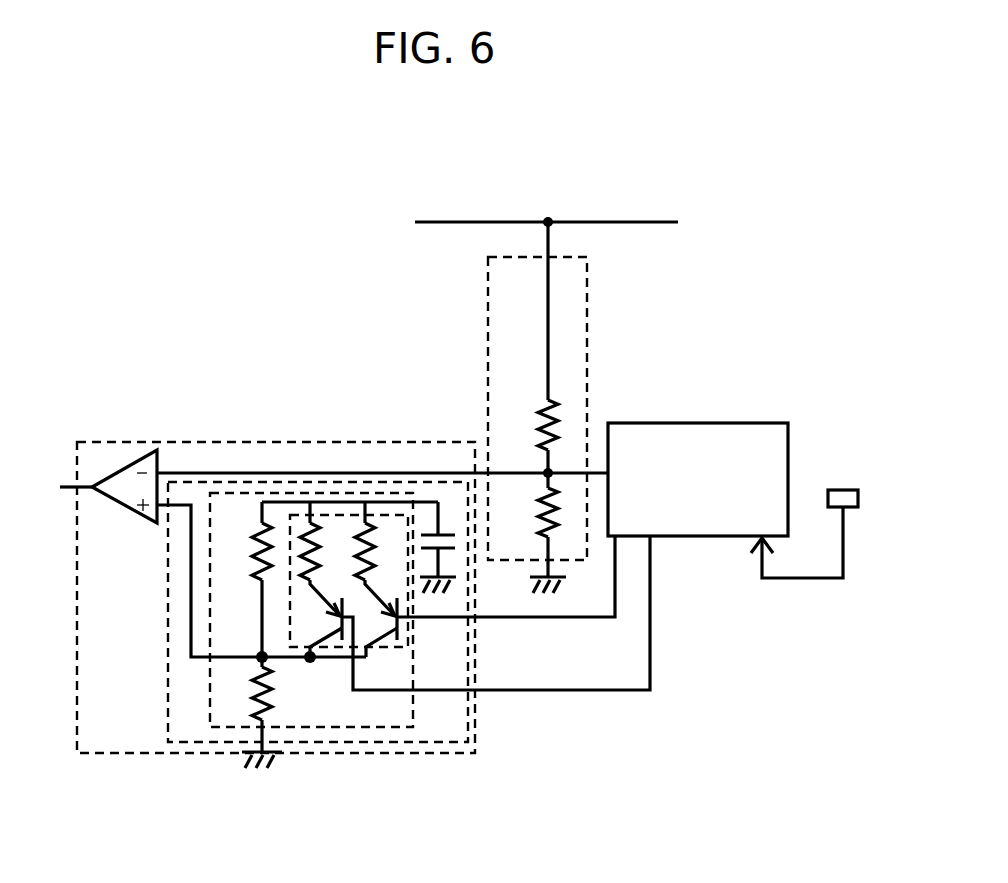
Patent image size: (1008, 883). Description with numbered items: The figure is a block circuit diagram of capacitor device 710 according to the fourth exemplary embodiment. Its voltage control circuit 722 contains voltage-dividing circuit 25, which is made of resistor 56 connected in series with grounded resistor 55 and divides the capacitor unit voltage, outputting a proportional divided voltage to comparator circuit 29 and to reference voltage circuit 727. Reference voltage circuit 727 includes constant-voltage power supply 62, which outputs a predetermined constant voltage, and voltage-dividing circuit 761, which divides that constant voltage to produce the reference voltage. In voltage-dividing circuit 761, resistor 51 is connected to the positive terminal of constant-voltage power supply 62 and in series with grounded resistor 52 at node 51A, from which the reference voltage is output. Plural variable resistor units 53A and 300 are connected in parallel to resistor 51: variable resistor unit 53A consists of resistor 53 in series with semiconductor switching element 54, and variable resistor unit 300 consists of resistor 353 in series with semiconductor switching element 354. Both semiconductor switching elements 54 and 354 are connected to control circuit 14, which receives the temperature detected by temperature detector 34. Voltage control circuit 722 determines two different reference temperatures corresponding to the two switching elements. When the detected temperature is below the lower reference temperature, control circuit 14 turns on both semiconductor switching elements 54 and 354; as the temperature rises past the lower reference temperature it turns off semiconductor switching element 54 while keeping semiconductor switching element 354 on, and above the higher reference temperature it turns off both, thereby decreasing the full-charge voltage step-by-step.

The capacitor device 710 is at (606, 187).
The voltage-dividing circuit 25 is at (488, 308).
The resistor 56 is at (563, 416).
The resistor 55 is at (555, 525).
The control circuit 14 is at (712, 423).
The temperature detector 34 is at (845, 488).
The comparator circuit 29 is at (155, 452).
The reference voltage circuit 727 is at (215, 480).
The resistor 53 is at (300, 540).
The resistor 353 is at (353, 537).
The constant-voltage power supply 62 is at (428, 527).
The resistor 51 is at (255, 548).
The node 51A is at (258, 655).
The voltage-dividing circuit 761 is at (208, 680).
The voltage control circuit 722 is at (103, 753).
The resistor 52 is at (248, 693).
The variable resistor unit 53A is at (300, 647).
The semiconductor switching element 54 is at (333, 645).
The variable resistor unit 300 is at (378, 647).
The semiconductor switching element 354 is at (387, 645).